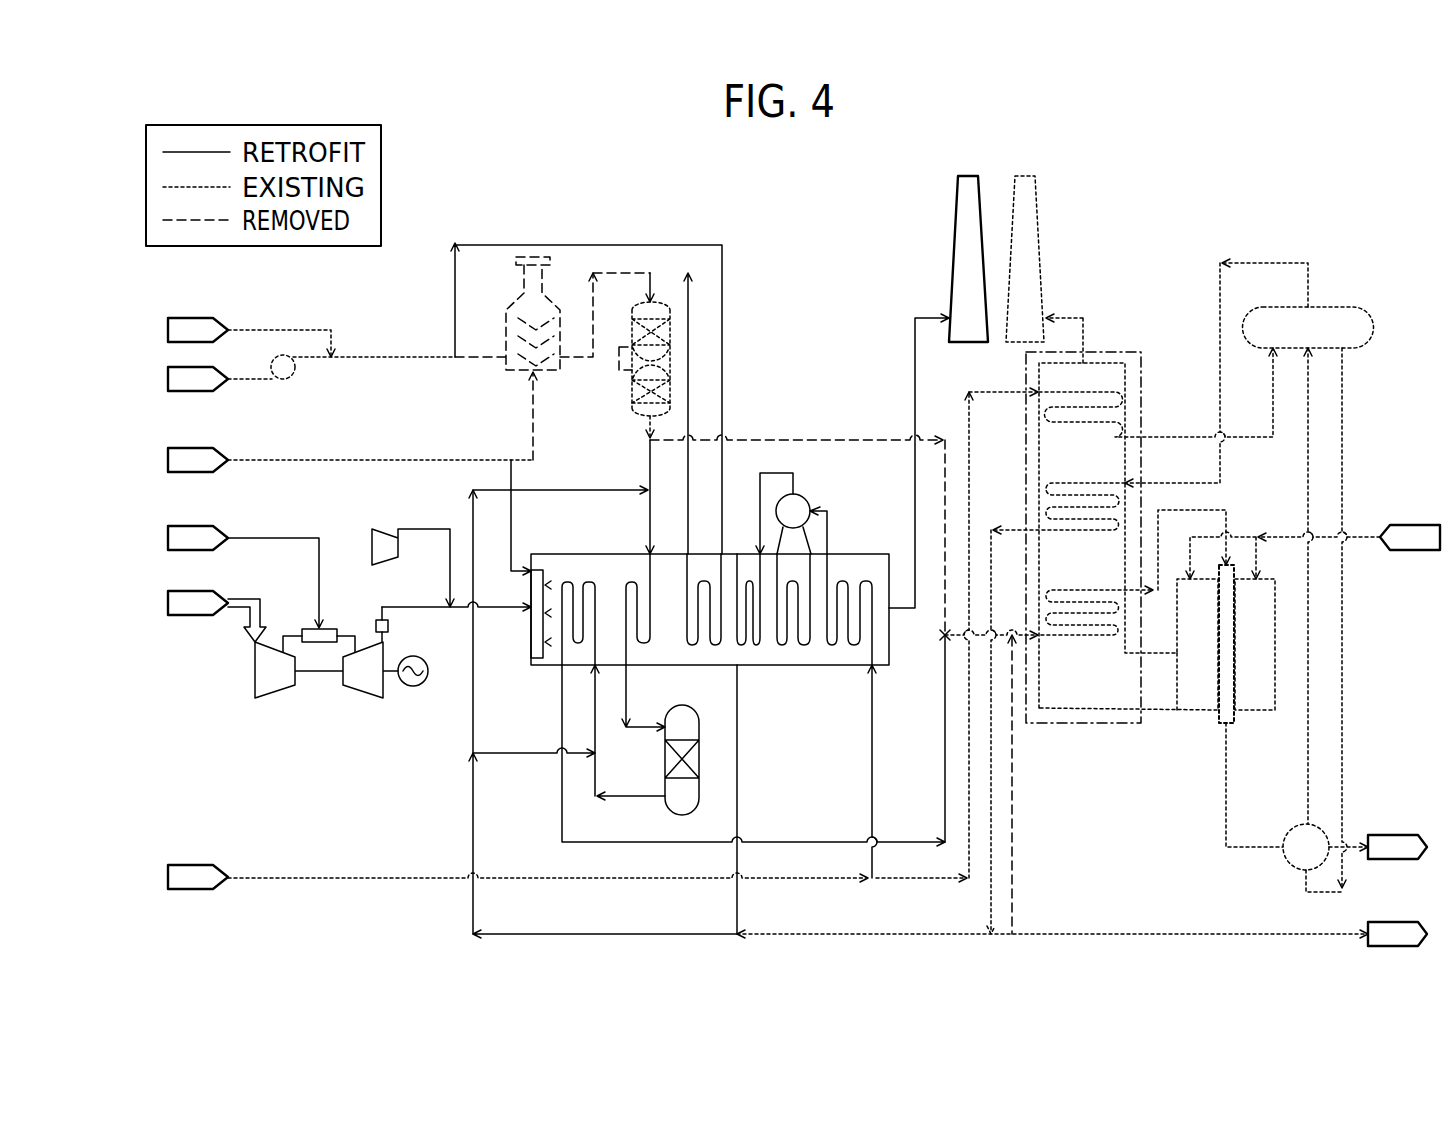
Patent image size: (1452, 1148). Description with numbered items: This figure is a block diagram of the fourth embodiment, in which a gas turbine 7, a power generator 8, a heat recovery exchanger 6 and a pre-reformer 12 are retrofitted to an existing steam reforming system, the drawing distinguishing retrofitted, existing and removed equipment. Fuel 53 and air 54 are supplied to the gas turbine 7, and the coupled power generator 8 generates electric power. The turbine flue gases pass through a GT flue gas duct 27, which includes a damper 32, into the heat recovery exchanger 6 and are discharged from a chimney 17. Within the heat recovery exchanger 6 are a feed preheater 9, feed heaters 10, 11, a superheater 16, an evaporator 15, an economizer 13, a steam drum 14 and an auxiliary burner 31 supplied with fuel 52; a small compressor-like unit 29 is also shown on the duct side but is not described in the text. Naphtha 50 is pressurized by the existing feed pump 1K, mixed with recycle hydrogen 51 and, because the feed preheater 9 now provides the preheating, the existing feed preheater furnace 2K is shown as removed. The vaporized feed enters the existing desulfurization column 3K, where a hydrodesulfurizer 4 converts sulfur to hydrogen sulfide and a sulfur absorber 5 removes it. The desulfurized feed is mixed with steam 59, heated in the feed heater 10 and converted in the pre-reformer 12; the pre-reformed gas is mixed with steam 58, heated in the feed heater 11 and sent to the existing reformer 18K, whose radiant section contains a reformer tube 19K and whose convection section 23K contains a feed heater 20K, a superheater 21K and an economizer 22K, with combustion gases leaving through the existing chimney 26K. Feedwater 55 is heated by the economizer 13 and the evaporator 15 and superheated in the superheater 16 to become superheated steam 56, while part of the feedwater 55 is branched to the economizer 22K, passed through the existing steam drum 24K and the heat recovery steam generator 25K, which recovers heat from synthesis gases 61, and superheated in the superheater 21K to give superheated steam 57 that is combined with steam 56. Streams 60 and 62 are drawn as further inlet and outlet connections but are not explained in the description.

The feed pump 1K is at (283, 379).
The feed preheater furnace 2K is at (516, 374).
The desulfurization column 3K is at (632, 418).
The hydrodesulfurizer 4 is at (630, 340).
The sulfur absorber 5 is at (630, 392).
The heat recovery exchanger 6 is at (531, 655).
The gas turbine 7 is at (318, 675).
The power generator 8 is at (413, 686).
The feed preheater 9 is at (706, 648).
The feed heater 10 is at (628, 580).
The feed heater 11 is at (565, 580).
The pre-reformer 12 is at (665, 806).
The economizer 13 is at (843, 648).
The steam drum 14 is at (805, 497).
The evaporator 15 is at (798, 648).
The superheater 16 is at (752, 648).
The chimney 17 is at (950, 255).
The reformer 18K is at (1175, 712).
The reformer tube 19K is at (1237, 715).
The feed heater 20K is at (1075, 640).
The superheater 21K is at (1075, 532).
The economizer 22K is at (1115, 423).
The convection section 23K is at (1072, 725).
The steam drum 24K is at (1335, 307).
The heat recovery steam generator 25K is at (1290, 866).
The chimney 26K is at (1043, 256).
The GT flue gas duct 27 is at (417, 606).
The auxiliary compressor 29 is at (372, 536).
The auxiliary burner 31 is at (531, 632).
The damper 32 is at (376, 622).
The naphtha 50 is at (165, 381).
The recycle hydrogen 51 is at (165, 332).
The fuel 52 is at (165, 462).
The fuel 53 is at (165, 540).
The air 54 is at (165, 605).
The feedwater 55 is at (165, 879).
The superheated steam 56 is at (742, 905).
The superheated steam 57 is at (986, 908).
The steam 58 is at (509, 758).
The steam 59 is at (587, 488).
The outlet 60 is at (1395, 922).
The synthesis gases 61 is at (1395, 835).
The water inlet 62 is at (1420, 525).